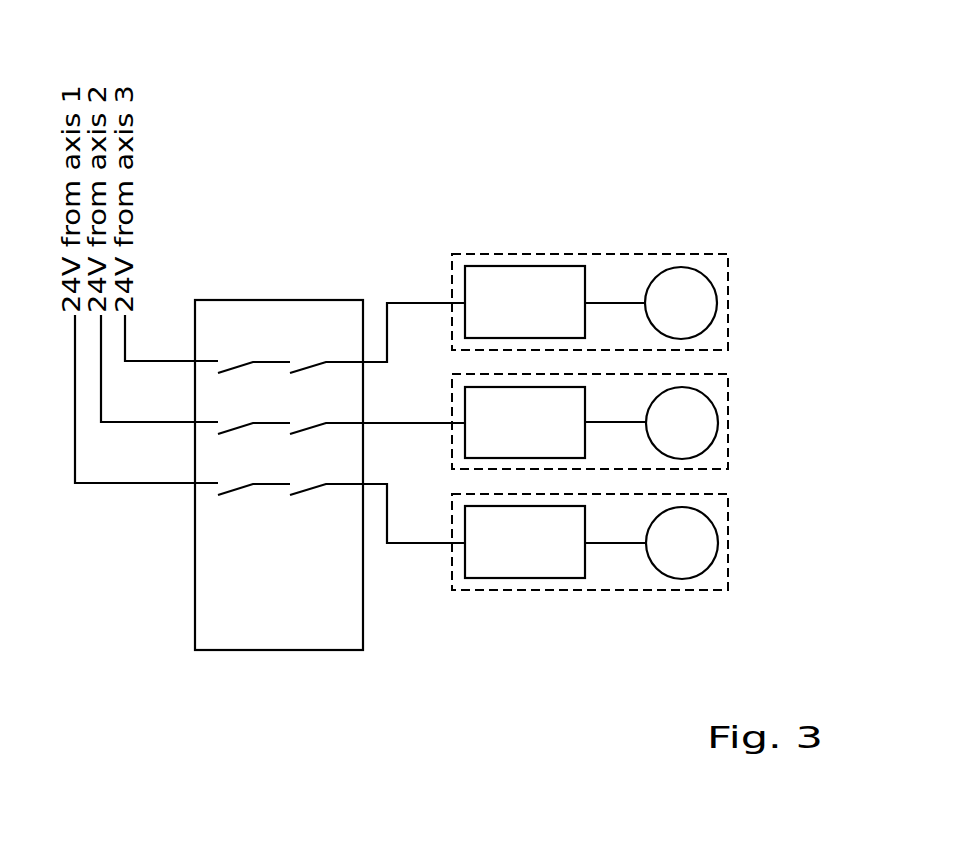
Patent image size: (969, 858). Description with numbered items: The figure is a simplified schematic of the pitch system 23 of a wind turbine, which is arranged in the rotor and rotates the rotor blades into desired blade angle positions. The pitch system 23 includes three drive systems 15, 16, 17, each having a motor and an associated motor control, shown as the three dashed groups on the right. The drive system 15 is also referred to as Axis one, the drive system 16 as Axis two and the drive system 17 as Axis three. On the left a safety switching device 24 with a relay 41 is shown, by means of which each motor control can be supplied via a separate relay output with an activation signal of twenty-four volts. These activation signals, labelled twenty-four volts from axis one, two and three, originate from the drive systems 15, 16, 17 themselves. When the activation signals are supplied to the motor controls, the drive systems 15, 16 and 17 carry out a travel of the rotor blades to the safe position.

The pitch system 23 is at (270, 100).
The safety switching device 24 is at (352, 635).
The relay 41 is at (282, 325).
The drive system 17 is at (639, 272).
The drive system 16 is at (610, 421).
The drive system 15 is at (639, 573).